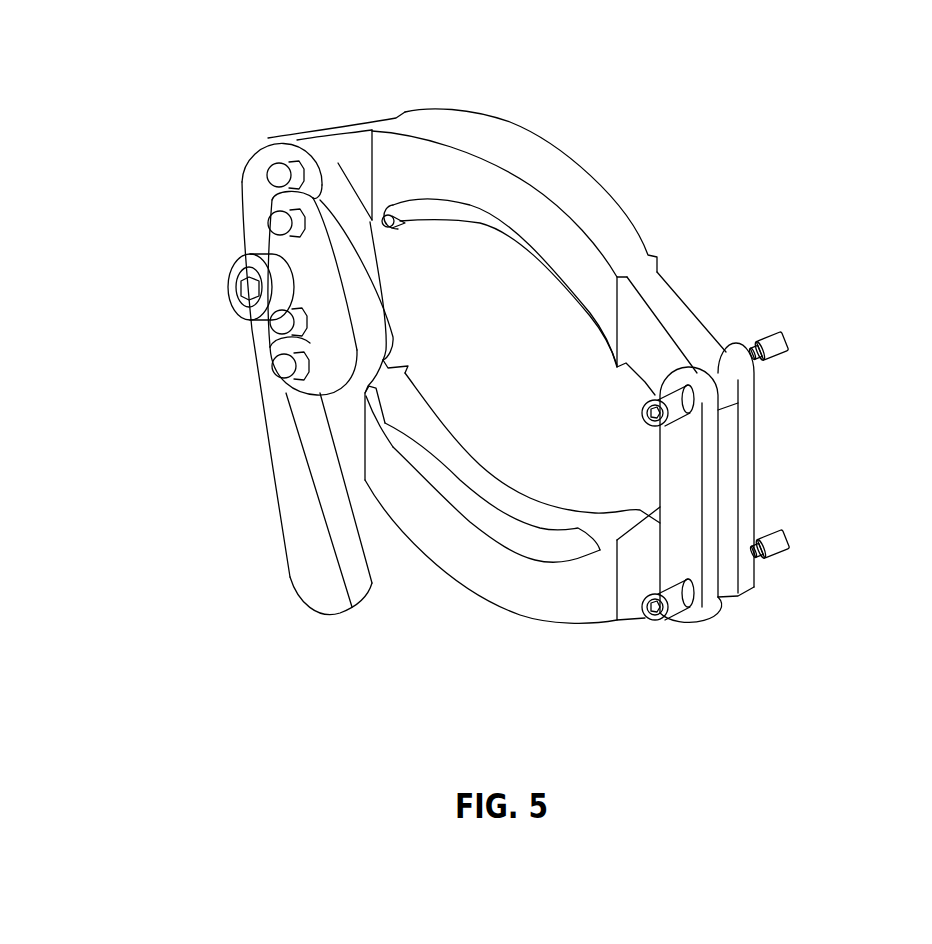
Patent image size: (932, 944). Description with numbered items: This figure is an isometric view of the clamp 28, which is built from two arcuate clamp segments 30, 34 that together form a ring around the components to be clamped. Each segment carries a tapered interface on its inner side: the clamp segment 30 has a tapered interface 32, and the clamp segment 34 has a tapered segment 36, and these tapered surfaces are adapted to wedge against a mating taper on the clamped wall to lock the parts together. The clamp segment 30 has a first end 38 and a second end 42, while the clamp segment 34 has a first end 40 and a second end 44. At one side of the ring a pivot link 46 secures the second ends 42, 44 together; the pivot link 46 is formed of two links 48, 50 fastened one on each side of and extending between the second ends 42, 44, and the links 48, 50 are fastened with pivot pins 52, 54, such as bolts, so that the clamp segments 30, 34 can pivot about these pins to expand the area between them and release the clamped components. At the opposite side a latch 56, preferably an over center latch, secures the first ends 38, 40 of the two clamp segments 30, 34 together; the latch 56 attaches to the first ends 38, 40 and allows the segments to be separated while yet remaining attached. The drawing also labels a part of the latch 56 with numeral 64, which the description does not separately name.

The clamp 28 is at (740, 178).
The clamp segment 30 is at (528, 130).
The tapered interface 32 is at (485, 232).
The clamp segment 34 is at (493, 605).
The tapered segment 36 is at (455, 495).
The first end 38 is at (405, 112).
The first end 40 is at (390, 513).
The second end 42 is at (672, 290).
The second end 44 is at (625, 620).
The pivot link 46 is at (806, 381).
The link 48 is at (702, 525).
The link 50 is at (757, 457).
The pivot pin 52 is at (792, 332).
The pivot pin 54 is at (762, 550).
The latch 56 is at (198, 232).
The thumb screw knob 64 is at (247, 290).